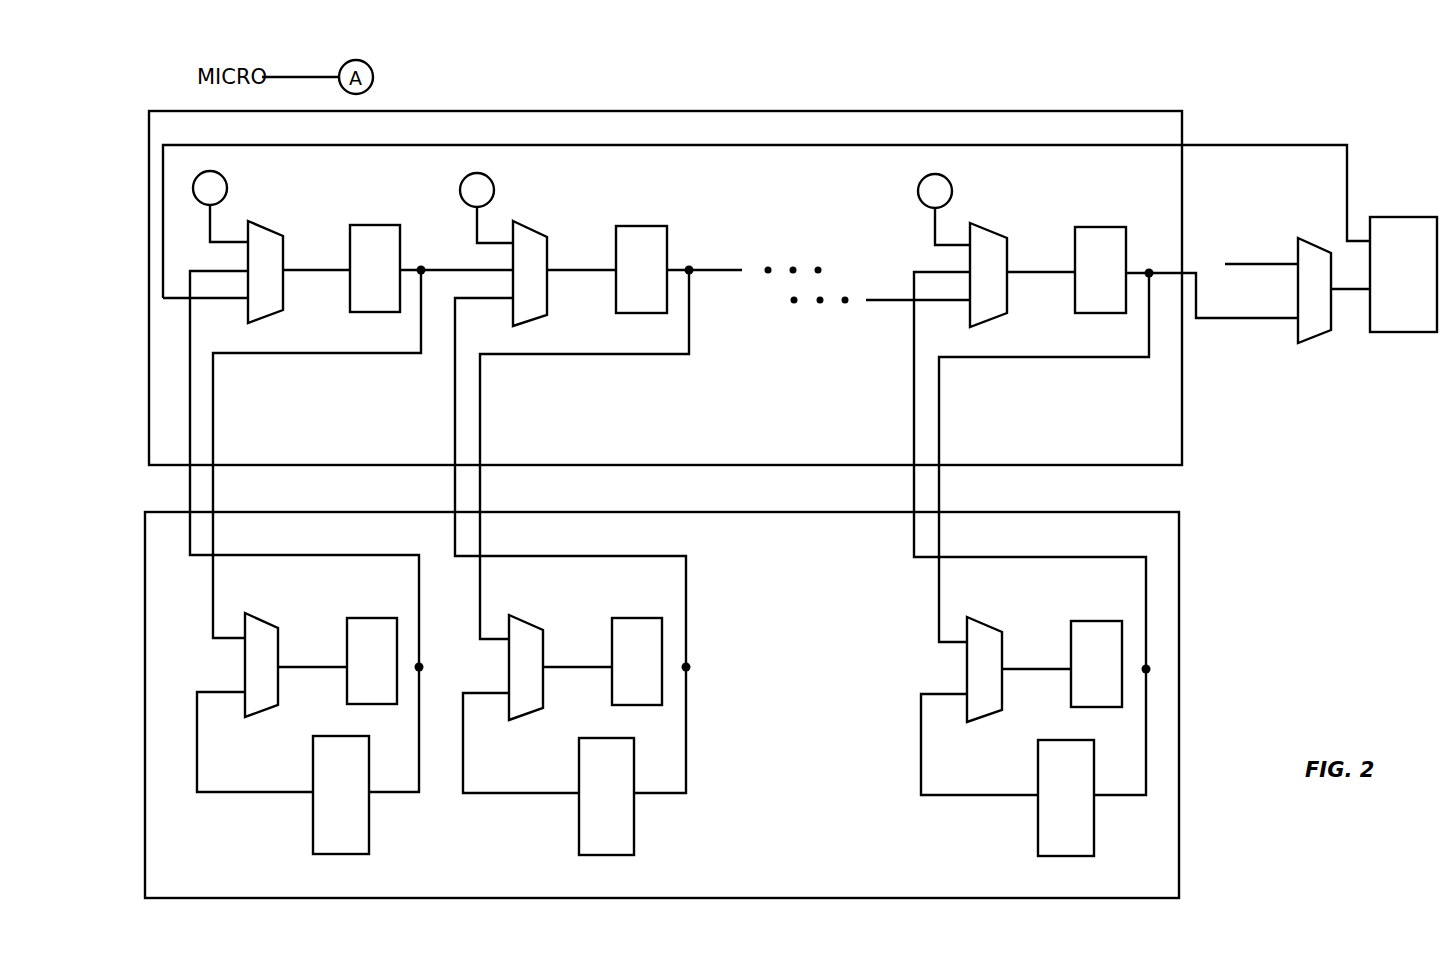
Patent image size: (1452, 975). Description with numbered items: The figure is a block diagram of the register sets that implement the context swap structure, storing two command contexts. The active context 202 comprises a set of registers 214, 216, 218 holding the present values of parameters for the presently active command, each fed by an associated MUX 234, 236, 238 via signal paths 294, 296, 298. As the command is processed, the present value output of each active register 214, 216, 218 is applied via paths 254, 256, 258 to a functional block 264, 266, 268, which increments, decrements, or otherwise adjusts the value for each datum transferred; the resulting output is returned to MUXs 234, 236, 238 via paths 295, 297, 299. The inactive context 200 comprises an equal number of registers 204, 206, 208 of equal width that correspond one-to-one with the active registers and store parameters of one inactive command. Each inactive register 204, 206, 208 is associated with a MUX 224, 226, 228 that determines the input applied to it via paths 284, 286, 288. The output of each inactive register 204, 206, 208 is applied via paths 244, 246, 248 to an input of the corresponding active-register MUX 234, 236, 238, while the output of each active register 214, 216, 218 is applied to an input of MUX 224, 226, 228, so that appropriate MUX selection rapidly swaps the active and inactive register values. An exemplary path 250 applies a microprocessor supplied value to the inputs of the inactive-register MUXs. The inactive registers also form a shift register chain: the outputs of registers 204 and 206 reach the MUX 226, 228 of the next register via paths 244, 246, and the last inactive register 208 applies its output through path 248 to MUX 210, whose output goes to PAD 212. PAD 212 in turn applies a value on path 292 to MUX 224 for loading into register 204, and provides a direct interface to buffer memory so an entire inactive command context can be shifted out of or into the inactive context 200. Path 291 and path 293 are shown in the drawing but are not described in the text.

The inactive context 200 is at (1182, 432).
The active context 202 is at (1179, 540).
The inactive register 204 is at (375, 225).
The inactive register 206 is at (667, 240).
The inactive register 208 is at (1110, 227).
The MUX 210 is at (1296, 330).
The PAD 212 is at (1410, 333).
The active register 214 is at (378, 618).
The active register 216 is at (645, 618).
The active register 218 is at (1103, 621).
The MUX 224 is at (262, 222).
The MUX 226 is at (535, 223).
The MUX 228 is at (990, 225).
The MUX 234 is at (277, 618).
The MUX 236 is at (535, 618).
The MUX 238 is at (992, 620).
The path 244 is at (382, 353).
The path 246 is at (645, 355).
The path 248 is at (1073, 358).
The path 250 is at (222, 212).
The path 254 is at (350, 555).
The path 256 is at (604, 555).
The path 258 is at (1060, 556).
The functional block 264 is at (313, 758).
The functional block 266 is at (636, 833).
The functional block 268 is at (1096, 835).
The path 284 is at (312, 272).
The path 286 is at (576, 272).
The path 288 is at (1035, 274).
The output line to pad 291 is at (1352, 292).
The path 292 is at (1283, 153).
The data line 293 is at (1232, 256).
The signal path 294 is at (310, 669).
The path 295 is at (220, 794).
The signal path 296 is at (575, 669).
The path 297 is at (478, 796).
The signal path 298 is at (1025, 671).
The path 299 is at (945, 798).